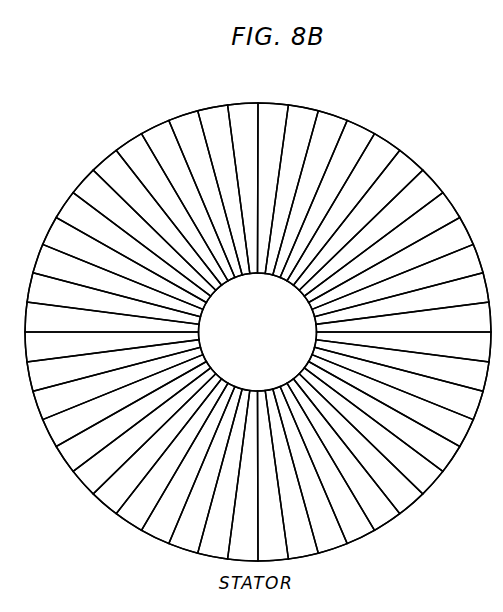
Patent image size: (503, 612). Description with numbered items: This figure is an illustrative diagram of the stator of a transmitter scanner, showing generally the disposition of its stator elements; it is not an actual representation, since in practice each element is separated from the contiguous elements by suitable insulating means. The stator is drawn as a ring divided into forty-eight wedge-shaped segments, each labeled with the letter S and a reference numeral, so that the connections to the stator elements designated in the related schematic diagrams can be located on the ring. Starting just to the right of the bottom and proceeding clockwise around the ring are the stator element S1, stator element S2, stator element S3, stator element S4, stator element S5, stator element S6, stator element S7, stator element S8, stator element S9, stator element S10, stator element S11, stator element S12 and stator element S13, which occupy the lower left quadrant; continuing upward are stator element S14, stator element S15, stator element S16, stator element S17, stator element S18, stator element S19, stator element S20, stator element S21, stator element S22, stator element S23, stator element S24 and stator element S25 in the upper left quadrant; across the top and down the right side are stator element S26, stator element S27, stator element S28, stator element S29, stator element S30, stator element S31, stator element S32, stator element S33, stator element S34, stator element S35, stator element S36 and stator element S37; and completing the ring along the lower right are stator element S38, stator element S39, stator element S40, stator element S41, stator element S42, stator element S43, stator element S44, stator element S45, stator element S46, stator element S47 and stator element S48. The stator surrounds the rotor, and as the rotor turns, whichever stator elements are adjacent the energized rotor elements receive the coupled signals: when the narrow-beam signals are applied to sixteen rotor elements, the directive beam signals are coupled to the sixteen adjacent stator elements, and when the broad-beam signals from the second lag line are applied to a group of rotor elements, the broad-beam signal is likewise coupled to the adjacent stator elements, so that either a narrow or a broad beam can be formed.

The stator element S1 is at (273, 476).
The stator element S2 is at (243, 476).
The stator element S3 is at (224, 474).
The stator element S4 is at (205, 470).
The stator element S5 is at (188, 463).
The stator element S6 is at (172, 455).
The stator element S7 is at (157, 444).
The stator element S8 is at (144, 431).
The stator element S9 is at (133, 417).
The stator element S10 is at (125, 401).
The stator element S11 is at (118, 383).
The stator element S12 is at (114, 366).
The stator element S13 is at (112, 347).
The stator element S14 is at (112, 317).
The stator element S15 is at (114, 299).
The stator element S16 is at (118, 280).
The stator element S17 is at (125, 264).
The stator element S18 is at (133, 248).
The stator element S19 is at (144, 233).
The stator element S20 is at (157, 220).
The stator element S21 is at (172, 210).
The stator element S22 is at (188, 200).
The stator element S23 is at (205, 194).
The stator element S24 is at (224, 190).
The stator element S25 is at (243, 188).
The stator element S26 is at (273, 188).
The stator element S27 is at (291, 190).
The stator element S28 is at (310, 194).
The stator element S29 is at (327, 200).
The stator element S30 is at (343, 210).
The stator element S31 is at (357, 220).
The stator element S32 is at (371, 233).
The stator element S33 is at (382, 248).
The stator element S34 is at (391, 264).
The stator element S35 is at (397, 280).
The stator element S36 is at (402, 299).
The stator element S37 is at (403, 317).
The stator element S38 is at (403, 347).
The stator element S39 is at (402, 366).
The stator element S40 is at (397, 383).
The stator element S41 is at (391, 401).
The stator element S42 is at (382, 417).
The stator element S43 is at (371, 431).
The stator element S44 is at (357, 444).
The stator element S45 is at (343, 455).
The stator element S46 is at (327, 463).
The stator element S47 is at (310, 470).
The stator element S48 is at (291, 474).